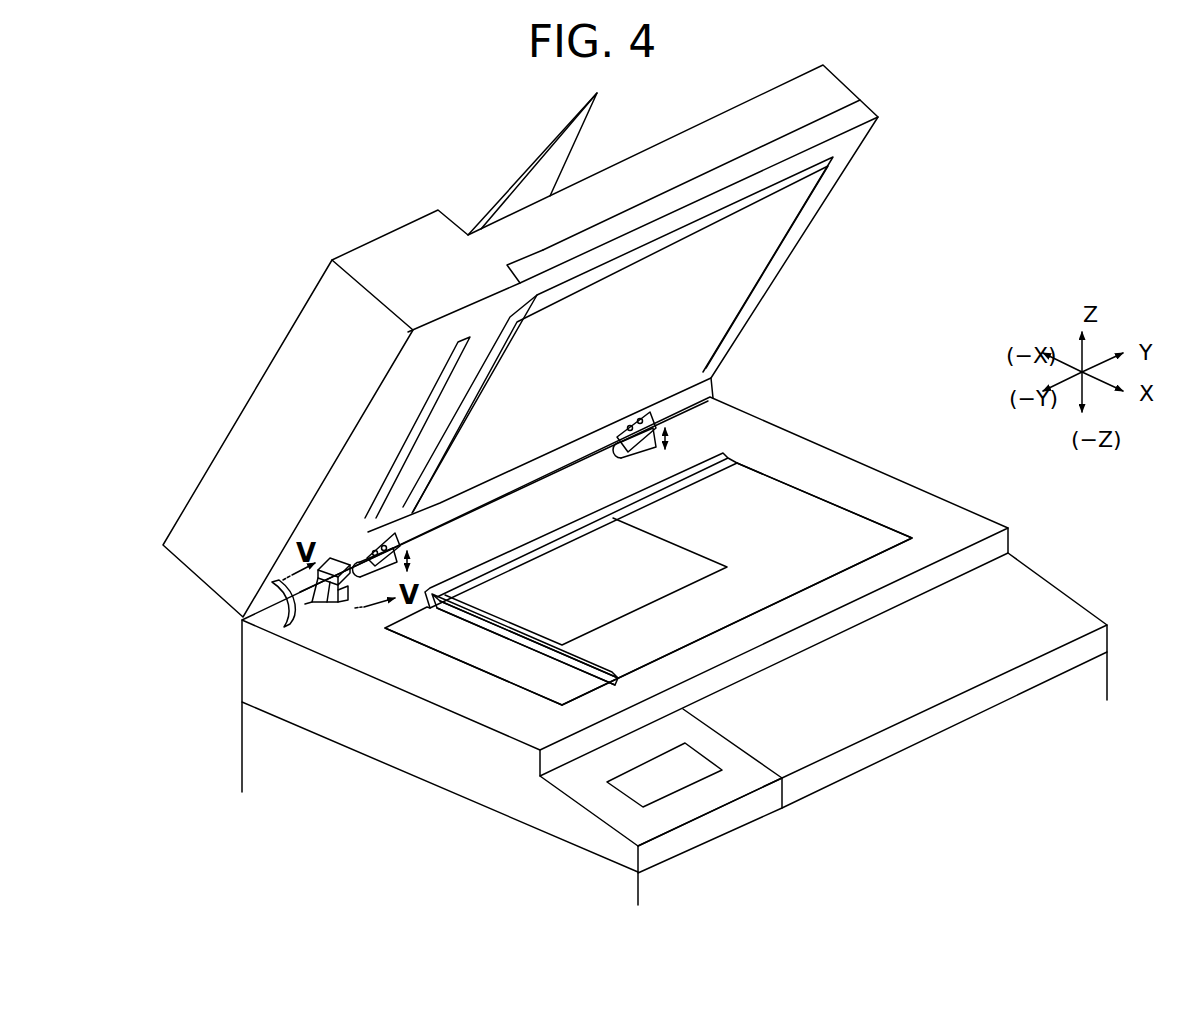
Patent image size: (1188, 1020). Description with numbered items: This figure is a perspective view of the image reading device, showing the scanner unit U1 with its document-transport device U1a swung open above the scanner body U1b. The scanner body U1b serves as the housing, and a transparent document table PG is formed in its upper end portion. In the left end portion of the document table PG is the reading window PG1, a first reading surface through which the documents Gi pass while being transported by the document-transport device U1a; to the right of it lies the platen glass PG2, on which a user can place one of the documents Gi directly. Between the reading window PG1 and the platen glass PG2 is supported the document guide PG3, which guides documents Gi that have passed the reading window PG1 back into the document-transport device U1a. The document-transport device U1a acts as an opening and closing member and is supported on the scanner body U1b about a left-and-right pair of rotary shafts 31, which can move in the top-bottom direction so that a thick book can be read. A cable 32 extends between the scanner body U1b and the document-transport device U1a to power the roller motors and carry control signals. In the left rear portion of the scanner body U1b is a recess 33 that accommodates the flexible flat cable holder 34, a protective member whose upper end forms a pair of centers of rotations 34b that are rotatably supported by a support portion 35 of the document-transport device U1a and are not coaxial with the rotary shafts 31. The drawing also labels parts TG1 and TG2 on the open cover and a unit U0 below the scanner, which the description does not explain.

The first target TG1 is at (550, 150).
The second target (document cover) TG2 is at (655, 143).
The rotary shafts 31 is at (357, 562).
The cable 32 is at (272, 580).
The recess 33 is at (342, 603).
The flexible flat cable (FFC) holder 34 is at (321, 603).
The centers of rotations 34b is at (306, 604).
The support portion 35 is at (330, 553).
The documents Gi is at (646, 532).
The document table PG is at (648, 594).
The reading window PG1 is at (572, 688).
The platen glass PG2 is at (722, 620).
The document guide PG3 is at (598, 660).
The operation unit U0 is at (600, 803).
The scanner unit U1 is at (606, 485).
The document-transport device U1a is at (513, 365).
The scanner body U1b is at (627, 651).